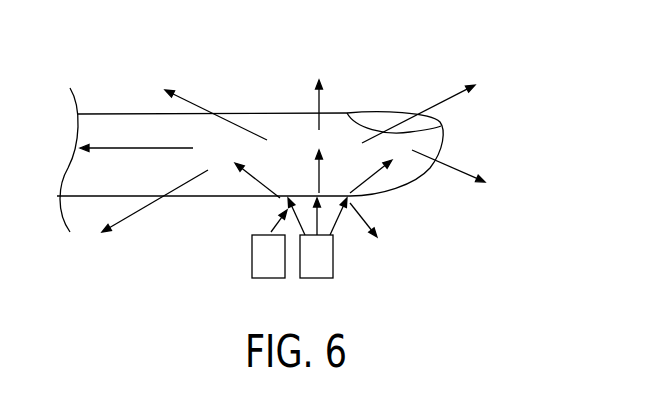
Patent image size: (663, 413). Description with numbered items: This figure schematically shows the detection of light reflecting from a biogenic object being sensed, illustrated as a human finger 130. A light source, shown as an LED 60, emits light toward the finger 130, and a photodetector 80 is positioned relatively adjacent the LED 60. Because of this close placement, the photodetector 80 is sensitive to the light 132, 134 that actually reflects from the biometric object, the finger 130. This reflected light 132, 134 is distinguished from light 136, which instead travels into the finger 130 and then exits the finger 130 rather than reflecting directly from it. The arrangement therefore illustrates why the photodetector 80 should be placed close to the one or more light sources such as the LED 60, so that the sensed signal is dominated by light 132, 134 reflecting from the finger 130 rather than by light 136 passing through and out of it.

The finger 130 is at (442, 138).
The light 132 is at (284, 205).
The light 134 is at (362, 215).
The light 136 is at (172, 188).
The LED 60 is at (333, 258).
The photodetector 80 is at (252, 258).